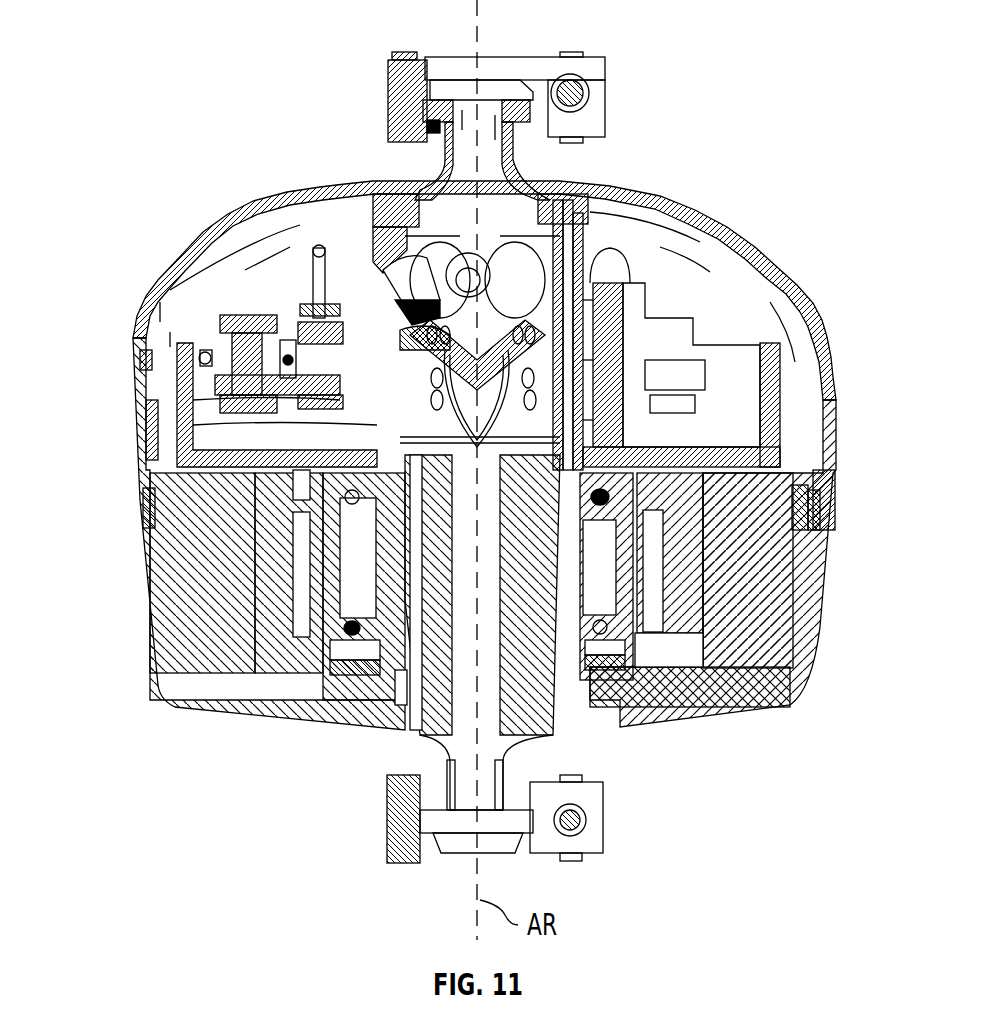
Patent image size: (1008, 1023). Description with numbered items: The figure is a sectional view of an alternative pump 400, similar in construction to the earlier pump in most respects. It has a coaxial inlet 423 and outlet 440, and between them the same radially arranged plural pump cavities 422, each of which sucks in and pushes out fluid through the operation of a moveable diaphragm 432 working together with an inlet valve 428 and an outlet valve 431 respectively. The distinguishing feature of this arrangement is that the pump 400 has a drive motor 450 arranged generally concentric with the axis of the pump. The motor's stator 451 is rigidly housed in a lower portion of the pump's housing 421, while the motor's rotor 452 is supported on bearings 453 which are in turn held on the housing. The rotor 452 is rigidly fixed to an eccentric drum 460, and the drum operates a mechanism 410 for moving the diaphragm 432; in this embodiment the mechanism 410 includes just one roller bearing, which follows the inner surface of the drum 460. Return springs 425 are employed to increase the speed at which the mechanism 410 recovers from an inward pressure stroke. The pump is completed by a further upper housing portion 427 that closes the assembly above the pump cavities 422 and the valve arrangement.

The pump 400 is at (200, 813).
The mechanism 410 is at (190, 300).
The housing 421 is at (223, 687).
The pump cavities 422 is at (170, 400).
The shaft 423 is at (467, 787).
The return springs 425 is at (307, 310).
The upper housing portion 427 is at (740, 225).
The inlet valve 428 is at (180, 440).
The outlet valve 431 is at (380, 267).
The moveable diaphragm 432 is at (195, 355).
The outlet 440 is at (490, 128).
The drive motor 450 is at (693, 693).
The stator 451 is at (777, 617).
The rotor 452 is at (803, 537).
The bearings 453 is at (587, 643).
The eccentric drum 460 is at (780, 390).